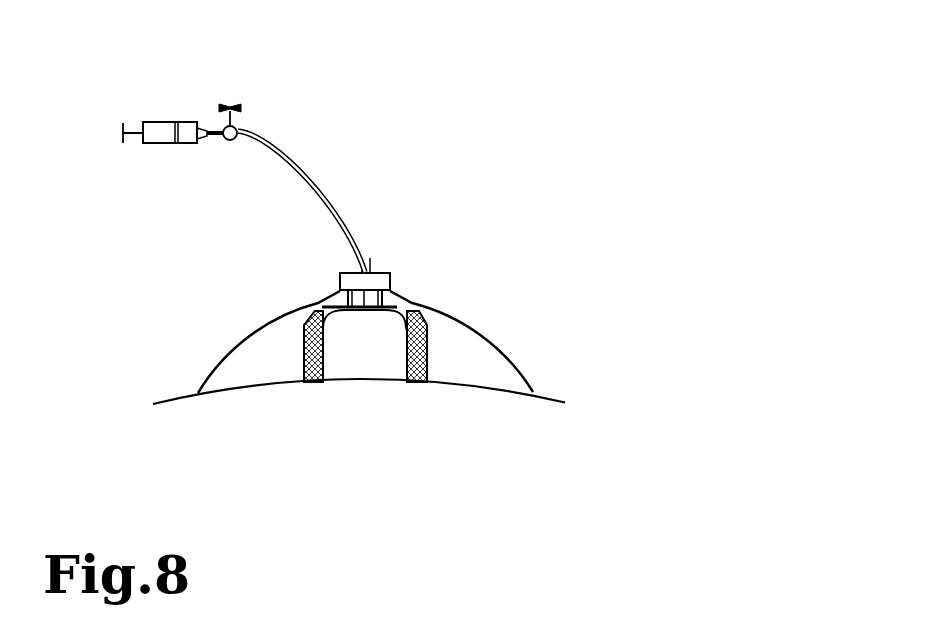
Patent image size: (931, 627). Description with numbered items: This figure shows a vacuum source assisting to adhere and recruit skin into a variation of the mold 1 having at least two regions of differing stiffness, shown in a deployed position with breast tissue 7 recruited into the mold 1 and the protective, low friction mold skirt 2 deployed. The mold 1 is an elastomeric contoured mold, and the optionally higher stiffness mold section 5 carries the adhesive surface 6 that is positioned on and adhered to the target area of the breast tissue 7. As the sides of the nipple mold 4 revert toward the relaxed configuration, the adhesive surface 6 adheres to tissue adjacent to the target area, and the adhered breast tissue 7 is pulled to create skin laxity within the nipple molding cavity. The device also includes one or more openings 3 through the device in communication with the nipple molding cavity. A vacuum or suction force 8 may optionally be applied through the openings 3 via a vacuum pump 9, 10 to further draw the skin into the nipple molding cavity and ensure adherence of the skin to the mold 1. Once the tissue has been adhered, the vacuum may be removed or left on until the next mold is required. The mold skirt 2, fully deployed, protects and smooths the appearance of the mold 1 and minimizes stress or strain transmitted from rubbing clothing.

The mold 1 is at (495, 302).
The mold skirt 2 is at (243, 335).
The openings 3 is at (363, 289).
The nipple mold 4 is at (427, 351).
The higher stiffness mold section 5 is at (421, 325).
The adhesive surface 6 is at (406, 318).
The breast tissue 7 is at (545, 397).
The vacuum or suction force 8 is at (374, 276).
The vacuum pump 9 is at (238, 127).
The vacuum pump 10 is at (157, 122).